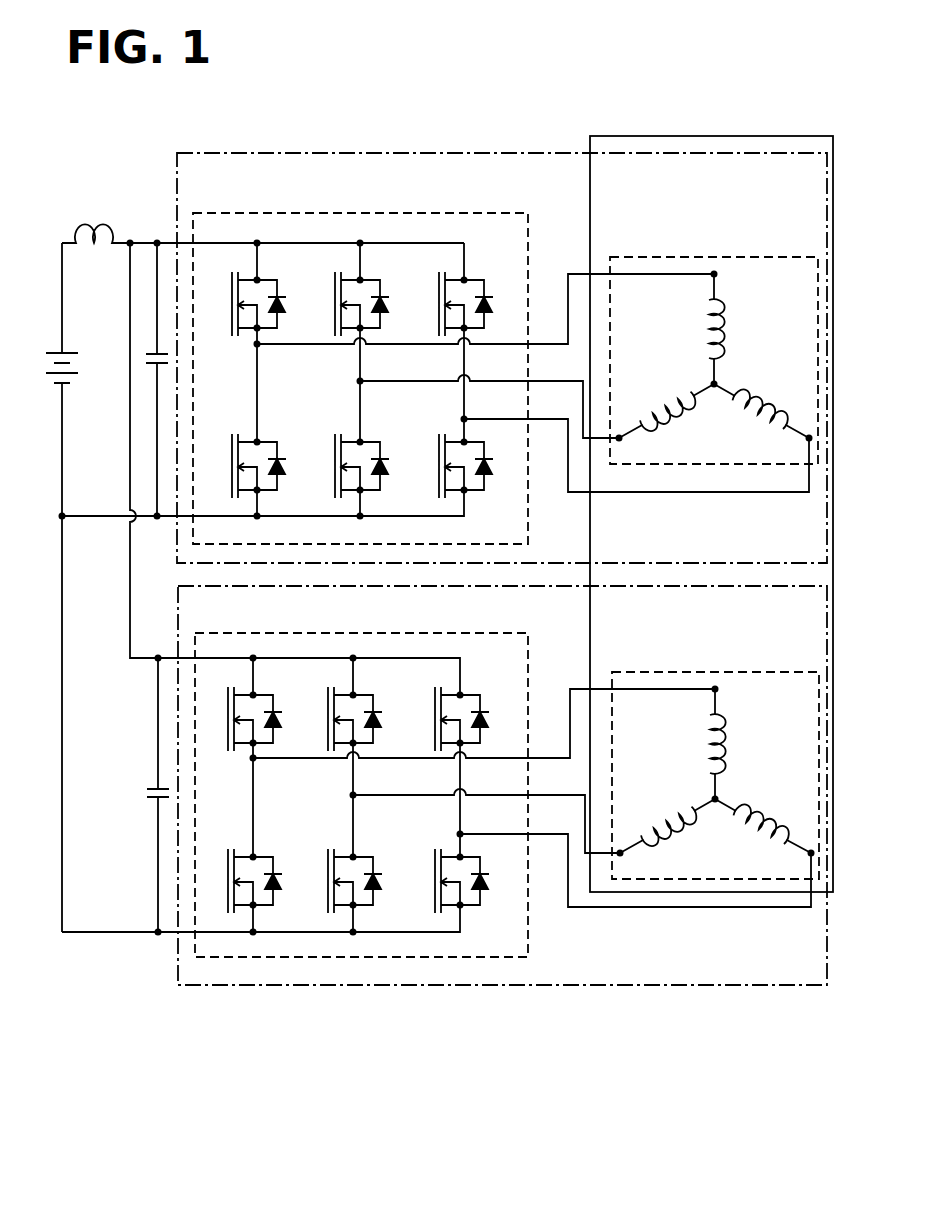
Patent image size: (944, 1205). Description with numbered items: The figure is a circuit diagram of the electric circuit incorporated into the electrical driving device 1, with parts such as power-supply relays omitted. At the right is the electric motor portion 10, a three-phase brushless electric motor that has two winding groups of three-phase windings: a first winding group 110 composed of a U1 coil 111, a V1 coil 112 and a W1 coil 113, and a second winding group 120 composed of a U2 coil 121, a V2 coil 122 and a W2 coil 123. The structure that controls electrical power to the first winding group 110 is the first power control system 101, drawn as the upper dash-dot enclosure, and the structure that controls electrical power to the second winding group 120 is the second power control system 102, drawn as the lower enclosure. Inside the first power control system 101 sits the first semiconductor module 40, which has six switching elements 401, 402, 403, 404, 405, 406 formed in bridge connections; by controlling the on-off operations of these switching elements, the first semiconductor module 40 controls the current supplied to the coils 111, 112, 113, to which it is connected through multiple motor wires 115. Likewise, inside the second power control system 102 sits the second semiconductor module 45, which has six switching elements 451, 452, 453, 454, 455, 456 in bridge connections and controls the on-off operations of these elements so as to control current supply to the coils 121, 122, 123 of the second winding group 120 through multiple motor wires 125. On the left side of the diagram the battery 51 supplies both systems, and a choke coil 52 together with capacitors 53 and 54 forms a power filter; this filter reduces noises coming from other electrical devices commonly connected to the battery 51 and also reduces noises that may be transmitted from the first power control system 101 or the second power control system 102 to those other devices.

The electrical driving device 1 is at (206, 1031).
The electric motor portion 10 is at (801, 136).
The first power control system 101 is at (252, 152).
The second power control system 102 is at (258, 986).
The first semiconductor module 40 is at (216, 212).
The second semiconductor module 45 is at (218, 633).
The battery 51 is at (74, 351).
The choke coil 52 is at (94, 230).
The capacitor 53 is at (153, 366).
The capacitor 54 is at (150, 800).
The first winding group 110 is at (658, 257).
The U1 coil 111 is at (727, 325).
The V1 coil 112 is at (662, 395).
The W1 coil 113 is at (762, 392).
The motor wires 115 is at (551, 321).
The second winding group 120 is at (651, 672).
The U2 coil 121 is at (728, 740).
The V2 coil 122 is at (664, 810).
The W2 coil 123 is at (763, 806).
The motor wires 125 is at (553, 741).
The switching element 401 is at (263, 282).
The switching element 402 is at (366, 282).
The switching element 403 is at (468, 278).
The switching element 404 is at (268, 440).
The switching element 405 is at (366, 441).
The switching element 406 is at (485, 483).
The switching element 451 is at (259, 698).
The switching element 452 is at (359, 698).
The switching element 453 is at (464, 692).
The switching element 454 is at (266, 855).
The switching element 455 is at (360, 856).
The switching element 456 is at (483, 897).